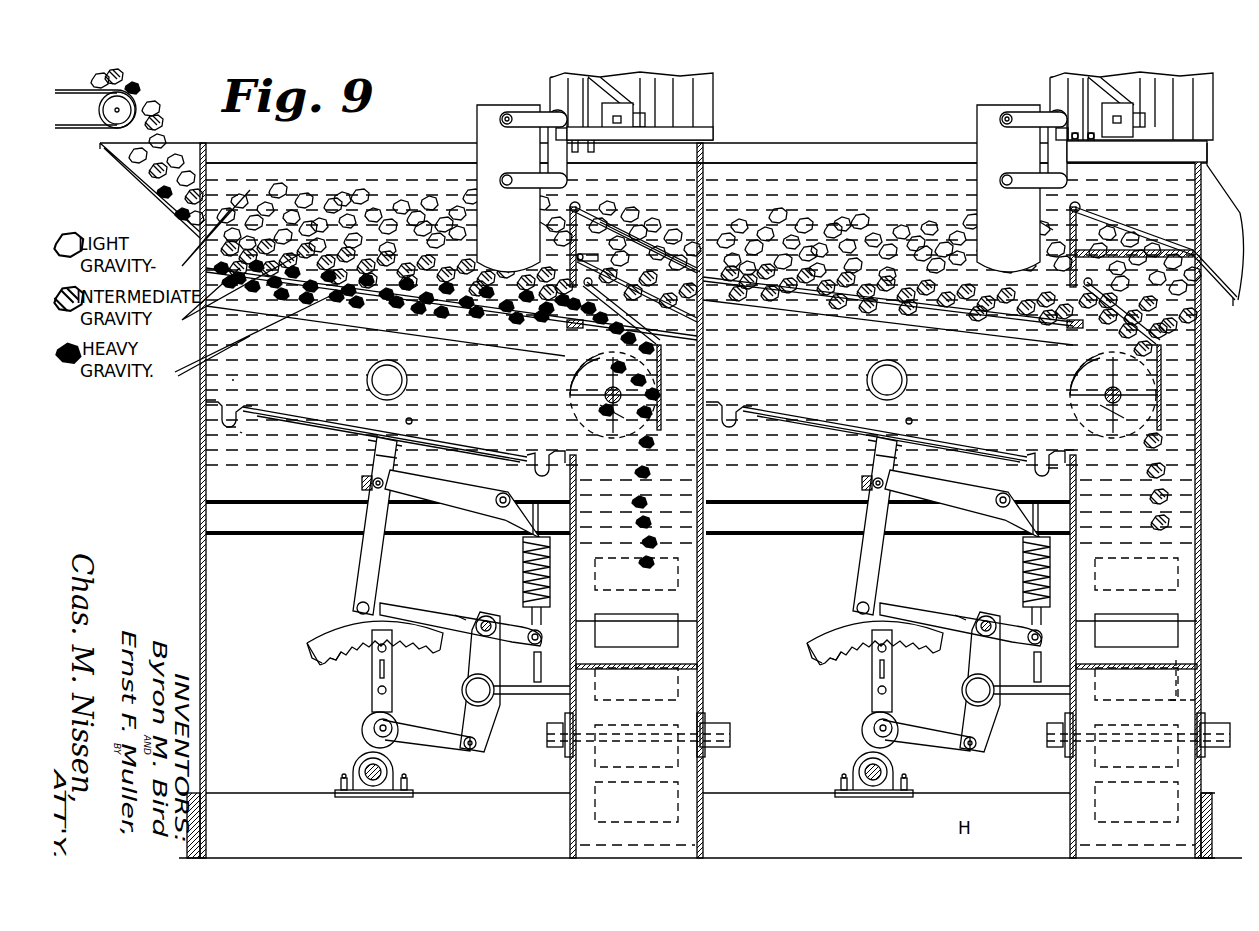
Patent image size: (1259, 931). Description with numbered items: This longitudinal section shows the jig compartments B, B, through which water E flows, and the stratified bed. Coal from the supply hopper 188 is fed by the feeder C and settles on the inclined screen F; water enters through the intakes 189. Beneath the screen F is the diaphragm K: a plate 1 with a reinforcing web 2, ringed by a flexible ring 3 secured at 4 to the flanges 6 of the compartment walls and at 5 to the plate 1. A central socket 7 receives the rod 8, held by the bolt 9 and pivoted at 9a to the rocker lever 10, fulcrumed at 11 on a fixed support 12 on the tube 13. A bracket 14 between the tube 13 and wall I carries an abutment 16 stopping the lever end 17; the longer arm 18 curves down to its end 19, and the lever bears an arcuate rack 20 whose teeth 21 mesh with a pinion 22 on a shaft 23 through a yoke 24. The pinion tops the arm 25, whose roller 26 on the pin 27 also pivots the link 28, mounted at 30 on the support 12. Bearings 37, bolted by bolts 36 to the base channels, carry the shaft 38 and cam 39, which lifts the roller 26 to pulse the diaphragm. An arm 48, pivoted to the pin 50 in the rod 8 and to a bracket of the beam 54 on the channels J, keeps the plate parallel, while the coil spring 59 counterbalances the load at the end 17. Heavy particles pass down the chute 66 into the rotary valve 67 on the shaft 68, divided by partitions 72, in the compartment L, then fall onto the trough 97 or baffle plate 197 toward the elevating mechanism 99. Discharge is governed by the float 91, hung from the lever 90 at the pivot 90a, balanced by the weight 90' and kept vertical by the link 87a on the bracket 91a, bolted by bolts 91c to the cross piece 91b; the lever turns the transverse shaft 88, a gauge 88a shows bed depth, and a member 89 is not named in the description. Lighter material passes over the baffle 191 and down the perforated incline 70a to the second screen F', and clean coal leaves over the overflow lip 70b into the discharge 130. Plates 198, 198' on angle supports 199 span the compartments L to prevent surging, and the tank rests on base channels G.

The plate 1 is at (435, 436).
The reinforcing web 2 is at (322, 437).
The flexible ring 3 is at (222, 420).
The securing point to flanges 4 is at (205, 408).
The securing point to plate 5 is at (252, 408).
The flanges 6 is at (214, 428).
The central socket 7 is at (376, 447).
The rod 8 is at (368, 560).
The bolt 9 is at (410, 425).
The pivotal interconnection 9a is at (357, 607).
The rocker lever 10 is at (428, 597).
The fulcrum 11 is at (487, 616).
The fixed support 12 is at (485, 739).
The tube 13 is at (492, 702).
The bracket 14 is at (542, 696).
The abutment 16 is at (541, 665).
The end of rocker lever 17 is at (532, 646).
The longer arm 18 is at (458, 618).
The end of arm 19 is at (312, 641).
The arcuate rack 20 is at (345, 655).
The teeth 21 is at (318, 666).
The pinion 22 is at (390, 651).
The shaft 23 is at (386, 630).
The yoke 24 is at (392, 677).
The vertically extending arm 25 is at (368, 692).
The roller 26 is at (364, 734).
The pin 27 is at (392, 725).
The link 28 is at (432, 746).
The pivot 30 is at (471, 750).
The bolts 36 is at (343, 796).
The bearings 37 is at (352, 776).
The shaft 38 is at (370, 783).
The cam 39 is at (379, 798).
The arm 48 is at (446, 488).
The pin 50 is at (362, 484).
The beam 54 is at (540, 521).
The coil spring 59 is at (548, 565).
The chute 66 is at (645, 330).
The rotary valve 67 is at (652, 420).
The shaft 68 is at (640, 390).
The perforated incline 70a is at (640, 245).
The overflow lip 70b is at (1137, 220).
The partitions 72 is at (616, 418).
The link 87a is at (527, 176).
The transverse shaft 88 is at (565, 137).
The gauge 88a is at (560, 90).
The beam 89 is at (715, 100).
The lever 90 is at (580, 120).
The pivot 90a is at (503, 118).
The adjustable weight 90' is at (634, 113).
The vertical float 91 is at (490, 150).
The bracket 91a is at (560, 160).
The angle iron cross piece 91b is at (557, 113).
The bolts 91c is at (580, 134).
The inclined trough 97 is at (690, 667).
The elevating mechanism 99 is at (1180, 684).
The discharge chute 130 is at (1233, 303).
The supply hopper 188 is at (150, 184).
The intakes 189 is at (407, 380).
The baffle 191 is at (553, 230).
The baffle plate 197 is at (686, 621).
The plate 198 is at (633, 237).
The plate 198' is at (1153, 253).
The angle support 199 is at (590, 284).
The compartment B is at (234, 380).
The feeding mechanism C is at (140, 92).
The body of fluid E is at (390, 185).
The screen F is at (451, 312).
The second screen F' is at (888, 311).
The transverse base channels G is at (206, 846).
The wall I is at (568, 773).
The upper channels J is at (270, 528).
The diaphragm K is at (242, 432).
The compartment L is at (682, 480).